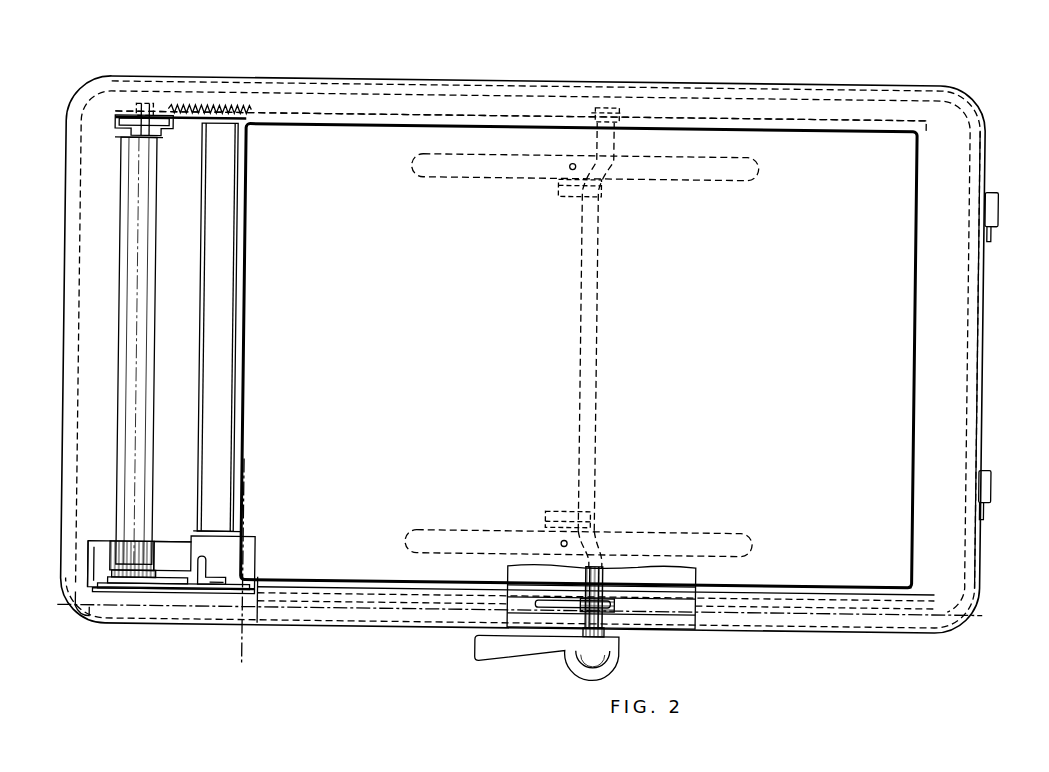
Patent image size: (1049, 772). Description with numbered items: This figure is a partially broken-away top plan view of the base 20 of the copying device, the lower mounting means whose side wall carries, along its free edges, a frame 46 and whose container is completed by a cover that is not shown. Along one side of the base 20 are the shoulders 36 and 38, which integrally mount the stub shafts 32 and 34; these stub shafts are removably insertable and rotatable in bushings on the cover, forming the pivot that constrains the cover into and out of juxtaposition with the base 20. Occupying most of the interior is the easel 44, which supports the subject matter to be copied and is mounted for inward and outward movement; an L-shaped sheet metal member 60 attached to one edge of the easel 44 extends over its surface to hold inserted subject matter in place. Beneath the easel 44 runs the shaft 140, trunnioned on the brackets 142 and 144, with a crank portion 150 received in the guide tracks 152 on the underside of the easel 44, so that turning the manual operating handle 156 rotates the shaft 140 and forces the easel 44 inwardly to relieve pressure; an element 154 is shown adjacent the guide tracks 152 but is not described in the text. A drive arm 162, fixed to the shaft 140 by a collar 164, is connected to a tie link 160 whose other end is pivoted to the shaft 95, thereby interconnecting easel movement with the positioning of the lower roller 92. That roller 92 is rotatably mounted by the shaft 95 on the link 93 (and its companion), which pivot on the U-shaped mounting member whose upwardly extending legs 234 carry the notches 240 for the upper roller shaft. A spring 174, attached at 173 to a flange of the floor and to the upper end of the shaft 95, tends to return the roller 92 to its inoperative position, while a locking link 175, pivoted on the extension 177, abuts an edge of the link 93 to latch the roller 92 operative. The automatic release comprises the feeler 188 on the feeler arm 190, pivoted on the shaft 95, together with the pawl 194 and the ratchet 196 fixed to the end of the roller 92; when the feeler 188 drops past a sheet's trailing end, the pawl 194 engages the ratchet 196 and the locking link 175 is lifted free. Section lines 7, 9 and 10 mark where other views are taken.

The base 20 is at (743, 80).
The easel 44 is at (427, 337).
The frame 46 is at (950, 388).
The shoulder 36 is at (997, 209).
The stub shaft 32 is at (990, 235).
The shoulder 38 is at (992, 485).
The stub shaft 34 is at (986, 511).
The L-shaped sheet metal member 60 is at (241, 414).
The lower roller 92 is at (142, 238).
The shaft 95 is at (140, 103).
The spring 174 is at (214, 107).
The attachment point of spring 174 173 is at (336, 110).
The crank portion 150 is at (596, 308).
The bracket 144 is at (620, 113).
The upper clip 154 is at (558, 190).
The guide tracks 152 is at (565, 511).
The shaft 140 is at (610, 562).
The drive arm 162 is at (547, 597).
The bracket 142 is at (657, 578).
The collar 164 is at (607, 634).
The manual operating handle 156 is at (505, 655).
The tie link 160 is at (222, 594).
The feeler arm 190 is at (243, 586).
The ratchet 196 is at (118, 537).
The pawl 194 is at (155, 567).
The link 93 is at (100, 590).
The locking link 175 is at (170, 580).
The extension 177 is at (167, 588).
The notches 240 is at (128, 592).
The feeler 188 is at (208, 558).
The upwardly extending legs 234 is at (83, 612).
The section line 7- 7 is at (110, 602).
The section line 9- 9 is at (112, 582).
The section line 10- 10 is at (234, 465).